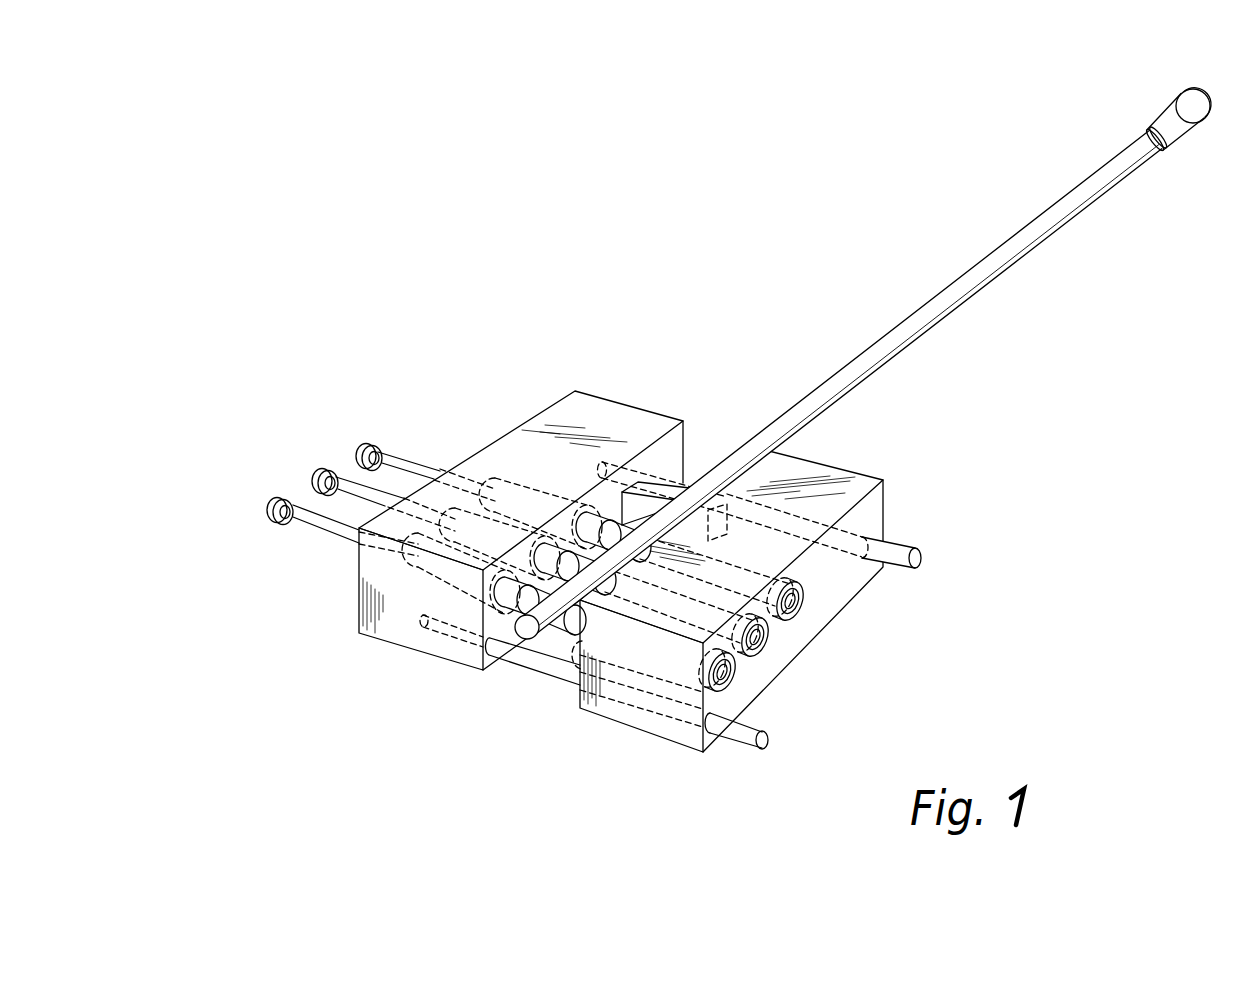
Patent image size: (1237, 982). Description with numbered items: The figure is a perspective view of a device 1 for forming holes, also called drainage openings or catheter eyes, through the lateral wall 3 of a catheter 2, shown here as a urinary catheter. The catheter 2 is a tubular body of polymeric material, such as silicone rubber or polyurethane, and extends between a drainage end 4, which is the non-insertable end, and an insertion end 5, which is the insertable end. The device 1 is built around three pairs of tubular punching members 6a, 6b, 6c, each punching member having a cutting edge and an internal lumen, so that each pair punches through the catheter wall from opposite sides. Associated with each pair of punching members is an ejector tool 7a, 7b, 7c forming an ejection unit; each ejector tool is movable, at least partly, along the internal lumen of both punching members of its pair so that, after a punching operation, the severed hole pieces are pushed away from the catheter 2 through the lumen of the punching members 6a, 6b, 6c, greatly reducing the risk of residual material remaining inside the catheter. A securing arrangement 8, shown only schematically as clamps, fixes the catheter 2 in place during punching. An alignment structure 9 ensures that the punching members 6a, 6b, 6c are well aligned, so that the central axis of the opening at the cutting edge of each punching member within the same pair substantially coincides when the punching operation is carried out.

The device 1 is at (900, 622).
The catheter 2 is at (825, 428).
The lateral wall 3 is at (868, 360).
The drainage end 4 is at (1183, 198).
The insertion end 5 is at (518, 656).
The tubular punching member 6a is at (518, 500).
The tubular punching member 6b is at (463, 527).
The tubular punching member 6c is at (423, 572).
The ejector tool 7a is at (413, 467).
The ejector tool 7b is at (357, 494).
The ejector tool 7c is at (291, 516).
The securing arrangement 8 is at (692, 503).
The alignment structure 9 is at (905, 545).